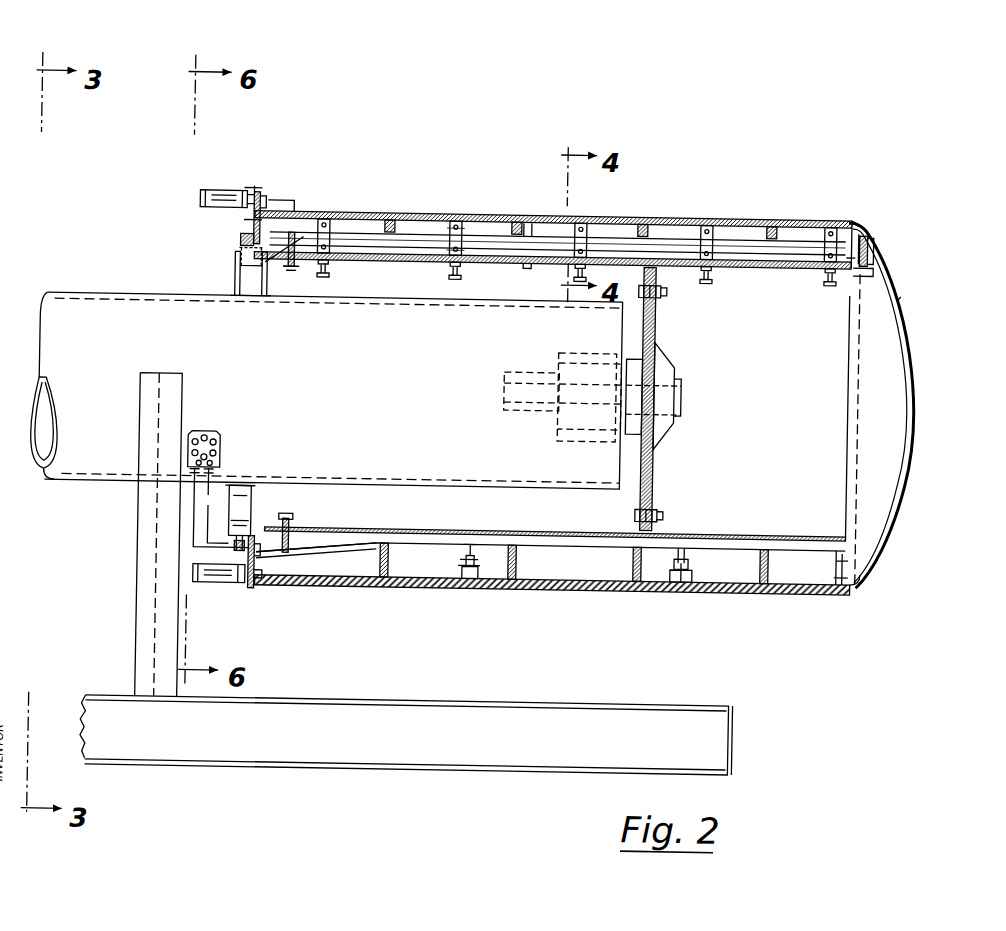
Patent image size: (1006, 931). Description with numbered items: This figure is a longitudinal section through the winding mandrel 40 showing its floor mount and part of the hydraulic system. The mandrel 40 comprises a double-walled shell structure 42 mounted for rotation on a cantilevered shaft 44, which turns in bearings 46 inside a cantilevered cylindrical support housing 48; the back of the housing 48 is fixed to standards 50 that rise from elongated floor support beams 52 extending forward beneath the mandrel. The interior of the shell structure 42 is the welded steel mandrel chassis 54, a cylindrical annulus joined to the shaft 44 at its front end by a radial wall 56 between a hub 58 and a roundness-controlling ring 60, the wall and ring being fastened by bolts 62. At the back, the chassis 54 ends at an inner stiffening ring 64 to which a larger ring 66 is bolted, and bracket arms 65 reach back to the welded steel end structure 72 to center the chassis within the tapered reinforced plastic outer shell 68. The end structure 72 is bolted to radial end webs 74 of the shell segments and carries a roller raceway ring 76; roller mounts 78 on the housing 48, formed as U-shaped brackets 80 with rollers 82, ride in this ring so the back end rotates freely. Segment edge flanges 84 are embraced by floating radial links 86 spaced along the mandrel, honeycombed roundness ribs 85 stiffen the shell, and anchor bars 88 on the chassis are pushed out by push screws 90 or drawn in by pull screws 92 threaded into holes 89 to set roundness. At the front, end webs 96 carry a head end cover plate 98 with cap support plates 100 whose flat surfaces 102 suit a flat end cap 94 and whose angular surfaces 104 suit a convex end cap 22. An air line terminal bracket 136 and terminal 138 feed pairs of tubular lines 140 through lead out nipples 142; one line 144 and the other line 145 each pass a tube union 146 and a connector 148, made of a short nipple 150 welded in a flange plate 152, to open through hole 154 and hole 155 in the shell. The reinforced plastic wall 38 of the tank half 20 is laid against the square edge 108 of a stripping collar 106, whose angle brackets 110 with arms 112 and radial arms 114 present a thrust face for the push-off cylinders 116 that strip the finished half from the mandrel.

The tank half 20 is at (526, 566).
The convex end cap 22 is at (906, 330).
The reinforced plastic wall 38 is at (760, 590).
The mandrel 40 is at (539, 376).
The double-walled shell structure 42 is at (672, 215).
The cantilevered shaft 44 is at (503, 374).
The bearings 46 is at (557, 358).
The cantilevered cylindrical support housing 48 is at (84, 298).
The standards 50 is at (139, 530).
The floor support beams 52 is at (298, 702).
The mandrel chassis 54 is at (779, 270).
The radial wall 56 is at (654, 320).
The hub 58 is at (674, 350).
The radial roundness-controlling ring 60 is at (660, 288).
The bolt 62 is at (250, 212).
The inner stiffening and roundness controlling ring 64 is at (332, 266).
The bracket arms 65 is at (300, 230).
The larger ring 66 is at (290, 278).
The outer shell 68 is at (540, 230).
The welded steel end structure 72 is at (253, 195).
The radial transverse end webs 74 is at (262, 212).
The roller raceway ring 76 is at (237, 245).
The roller mounts 78 is at (226, 276).
The U-shaped brackets 80 is at (232, 290).
The rollers 82 is at (238, 258).
The radial and axially extending flanges 84 is at (408, 236).
The honeycombed roundness ribs 85 is at (386, 230).
The radial links 86 is at (455, 236).
The anchor bars 88 is at (492, 260).
The threaded holes 89 is at (530, 266).
The push screws 90 is at (440, 265).
The pull screws 92 is at (364, 266).
The flat end cap 94 is at (898, 290).
The radial transverse end web 96 is at (840, 232).
The head end cover plate 98 is at (872, 266).
The cap support plates 100 is at (866, 245).
The flat surfaces 102 is at (870, 250).
The angular surfaces 104 is at (860, 222).
The stripping collar 106 is at (272, 208).
The square edge 108 is at (298, 558).
The angle brackets 110 is at (260, 592).
The arm 112 is at (272, 584).
The radial arm 114 is at (250, 590).
The push-off cylinders 116 is at (230, 194).
The air lines terminal bracket 136 is at (222, 488).
The air line terminal 138 is at (200, 436).
The pair of tubular air lines 140 is at (205, 515).
The lead out nipples 142 is at (262, 548).
The line 144 is at (318, 531).
The other line 145 is at (585, 545).
The tube union 146 is at (690, 555).
The connector 148 is at (692, 565).
The short nipple 150 is at (466, 578).
The flange plate 152 is at (470, 580).
The hole 154 is at (474, 580).
The hole 155 is at (686, 580).